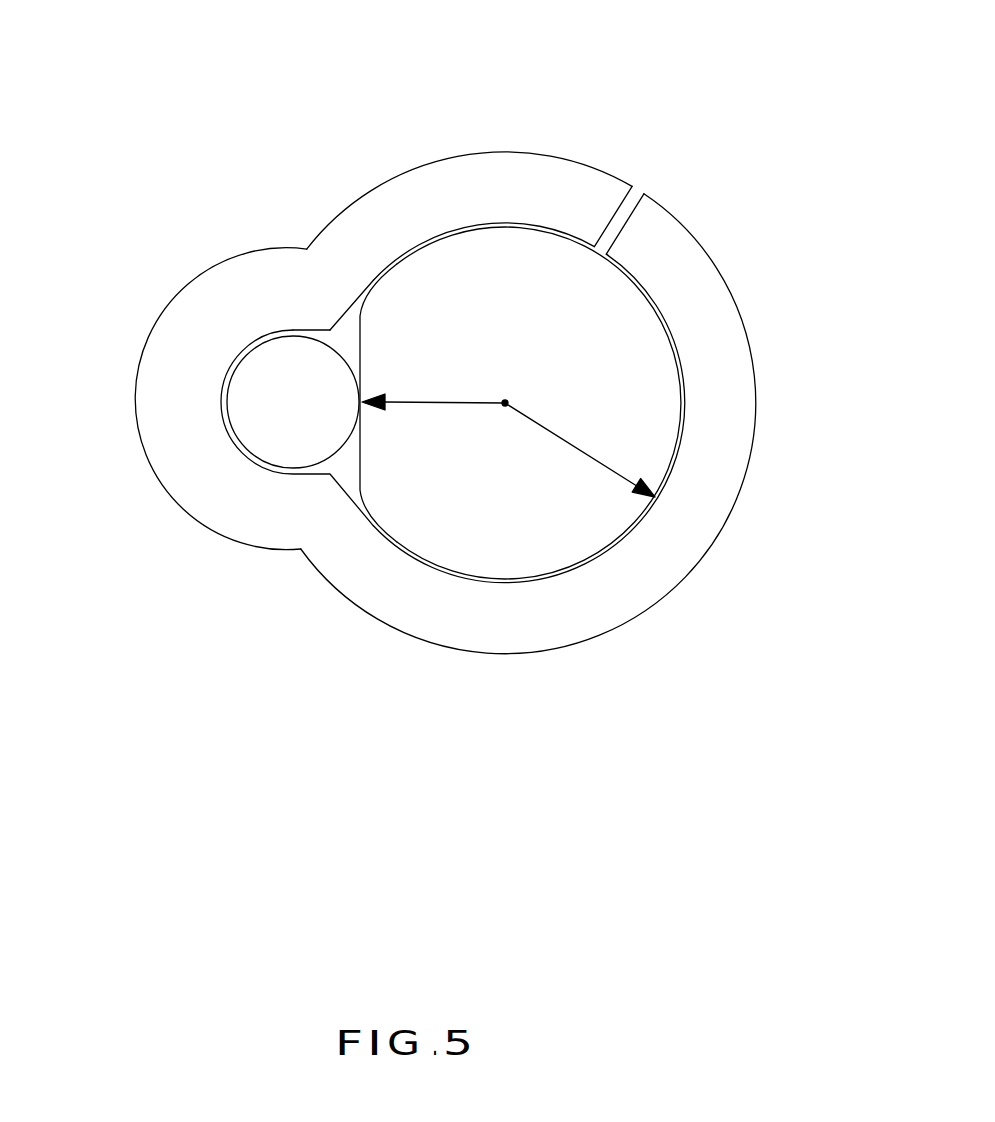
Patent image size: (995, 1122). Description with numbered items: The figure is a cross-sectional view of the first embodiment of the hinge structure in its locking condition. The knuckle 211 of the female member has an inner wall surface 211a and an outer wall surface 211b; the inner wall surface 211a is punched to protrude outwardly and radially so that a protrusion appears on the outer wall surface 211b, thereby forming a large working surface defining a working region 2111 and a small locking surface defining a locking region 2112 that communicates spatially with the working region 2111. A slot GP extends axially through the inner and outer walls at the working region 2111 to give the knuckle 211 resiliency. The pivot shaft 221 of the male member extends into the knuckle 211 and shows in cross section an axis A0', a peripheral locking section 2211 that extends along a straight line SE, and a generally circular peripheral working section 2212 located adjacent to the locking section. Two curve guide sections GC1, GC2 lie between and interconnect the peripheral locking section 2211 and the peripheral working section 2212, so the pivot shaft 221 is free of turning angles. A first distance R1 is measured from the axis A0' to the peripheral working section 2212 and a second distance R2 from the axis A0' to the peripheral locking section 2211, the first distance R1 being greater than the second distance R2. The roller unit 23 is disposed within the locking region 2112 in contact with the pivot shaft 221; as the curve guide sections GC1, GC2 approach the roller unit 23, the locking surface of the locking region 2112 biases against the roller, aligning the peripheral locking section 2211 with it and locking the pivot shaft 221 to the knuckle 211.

The knuckle 211 is at (776, 304).
The inner wall surface 211a is at (343, 315).
The outer wall surface 211b is at (302, 255).
The working region 2111 is at (742, 428).
The locking region 2112 is at (190, 402).
The pivot shaft 221 is at (408, 353).
The peripheral locking section 2211 is at (358, 452).
The peripheral working section 2212 is at (638, 525).
The roller unit 23 is at (255, 387).
The slot GP is at (628, 217).
The curve guide section GC1 is at (299, 255).
The curve guide section GC2 is at (378, 496).
The straight line SE is at (330, 329).
The first distance R1 is at (580, 445).
The second distance R2 is at (433, 379).
The axis A0' is at (503, 581).